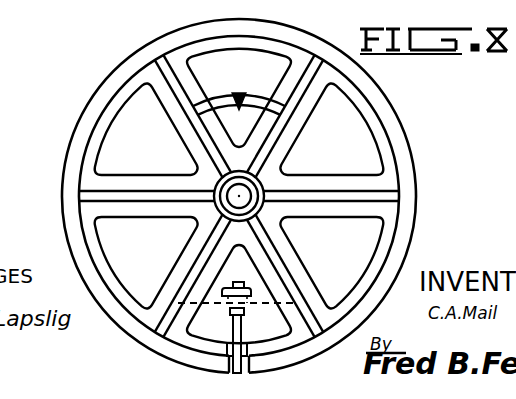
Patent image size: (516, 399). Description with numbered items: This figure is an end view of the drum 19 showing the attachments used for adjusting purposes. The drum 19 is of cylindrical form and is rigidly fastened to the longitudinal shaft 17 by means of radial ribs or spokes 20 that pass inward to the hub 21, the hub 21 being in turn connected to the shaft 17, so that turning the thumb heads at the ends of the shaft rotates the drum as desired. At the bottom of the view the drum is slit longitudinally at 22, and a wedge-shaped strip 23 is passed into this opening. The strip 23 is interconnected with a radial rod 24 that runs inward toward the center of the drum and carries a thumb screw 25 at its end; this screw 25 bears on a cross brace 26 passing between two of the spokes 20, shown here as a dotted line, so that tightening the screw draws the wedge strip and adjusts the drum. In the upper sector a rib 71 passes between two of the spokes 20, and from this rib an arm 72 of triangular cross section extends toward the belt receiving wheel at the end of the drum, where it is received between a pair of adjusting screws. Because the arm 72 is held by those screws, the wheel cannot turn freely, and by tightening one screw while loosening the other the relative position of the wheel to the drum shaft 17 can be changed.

The longitudinal shaft 17 is at (239, 195).
The drum 19 is at (80, 165).
The radial ribs or spokes 20 is at (122, 188).
The hub 21 is at (252, 184).
The longitudinal slit 22 is at (249, 358).
The wedge-shaped strip 23 is at (230, 348).
The radial rod 24 is at (242, 327).
The thumb screw 25 is at (230, 289).
The cross brace 26 is at (258, 300).
The rib 71 is at (256, 101).
The arm 72 is at (234, 93).